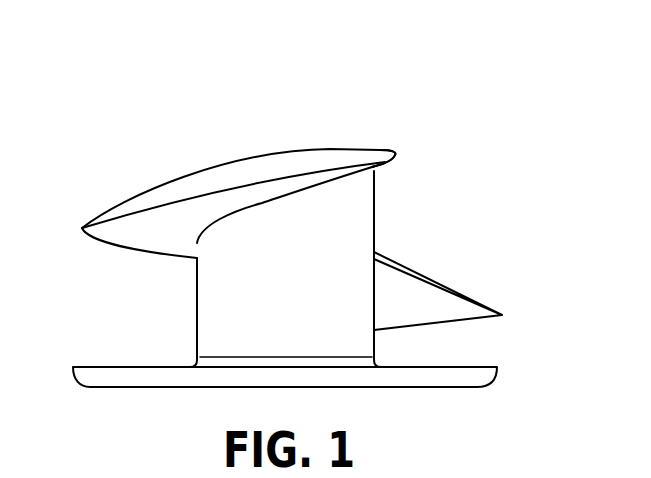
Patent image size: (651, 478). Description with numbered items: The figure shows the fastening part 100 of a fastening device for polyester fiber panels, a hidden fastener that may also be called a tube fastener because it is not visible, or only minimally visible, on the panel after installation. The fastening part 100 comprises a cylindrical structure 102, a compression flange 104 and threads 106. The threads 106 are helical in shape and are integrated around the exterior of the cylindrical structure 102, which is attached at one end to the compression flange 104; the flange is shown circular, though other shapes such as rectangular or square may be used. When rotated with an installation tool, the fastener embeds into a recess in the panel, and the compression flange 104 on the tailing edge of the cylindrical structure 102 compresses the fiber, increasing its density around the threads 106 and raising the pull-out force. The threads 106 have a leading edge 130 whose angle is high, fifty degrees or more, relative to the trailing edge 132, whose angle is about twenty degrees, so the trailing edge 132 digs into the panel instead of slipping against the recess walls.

The fastening part 100 is at (104, 121).
The cylindrical structure 102 is at (375, 218).
The compression flange 104 is at (472, 367).
The threads 106 is at (332, 148).
The leading edge 130 is at (397, 155).
The trailing edge 132 is at (503, 315).